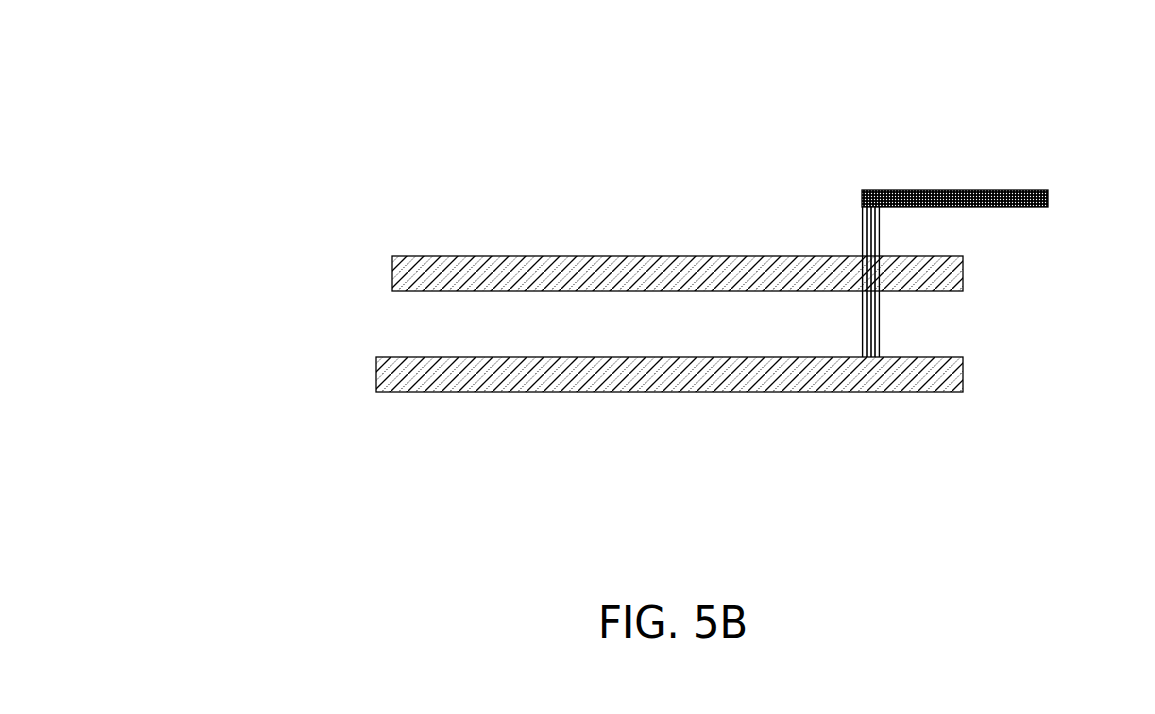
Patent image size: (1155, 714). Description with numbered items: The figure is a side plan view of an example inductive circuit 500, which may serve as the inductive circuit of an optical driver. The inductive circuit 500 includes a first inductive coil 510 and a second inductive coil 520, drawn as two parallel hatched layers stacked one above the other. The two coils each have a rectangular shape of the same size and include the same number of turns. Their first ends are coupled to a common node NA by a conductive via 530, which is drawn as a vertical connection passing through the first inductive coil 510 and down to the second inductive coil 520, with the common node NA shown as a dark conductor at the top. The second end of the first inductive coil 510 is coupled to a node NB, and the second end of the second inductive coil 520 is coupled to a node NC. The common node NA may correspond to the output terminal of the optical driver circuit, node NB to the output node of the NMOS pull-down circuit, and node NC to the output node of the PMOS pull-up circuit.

The inductive circuit 500 is at (149, 74).
The first inductive coil 510 is at (976, 270).
The second inductive coil 520 is at (976, 379).
The conductive via 530 is at (848, 232).
The common node NA is at (1060, 199).
The node NB is at (399, 247).
The node NC is at (383, 401).